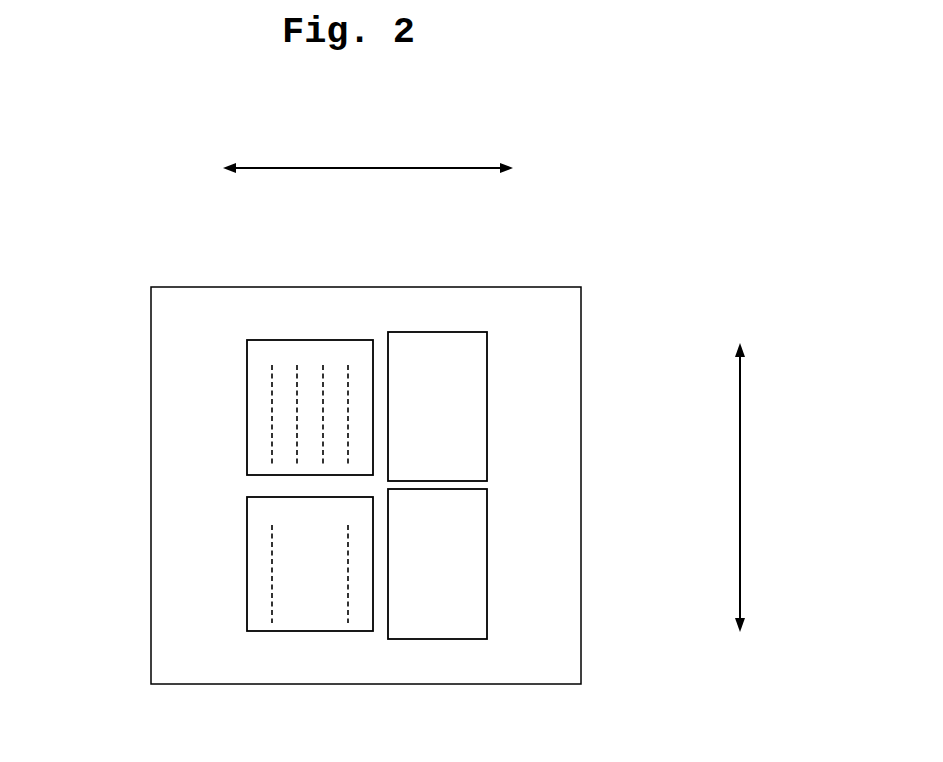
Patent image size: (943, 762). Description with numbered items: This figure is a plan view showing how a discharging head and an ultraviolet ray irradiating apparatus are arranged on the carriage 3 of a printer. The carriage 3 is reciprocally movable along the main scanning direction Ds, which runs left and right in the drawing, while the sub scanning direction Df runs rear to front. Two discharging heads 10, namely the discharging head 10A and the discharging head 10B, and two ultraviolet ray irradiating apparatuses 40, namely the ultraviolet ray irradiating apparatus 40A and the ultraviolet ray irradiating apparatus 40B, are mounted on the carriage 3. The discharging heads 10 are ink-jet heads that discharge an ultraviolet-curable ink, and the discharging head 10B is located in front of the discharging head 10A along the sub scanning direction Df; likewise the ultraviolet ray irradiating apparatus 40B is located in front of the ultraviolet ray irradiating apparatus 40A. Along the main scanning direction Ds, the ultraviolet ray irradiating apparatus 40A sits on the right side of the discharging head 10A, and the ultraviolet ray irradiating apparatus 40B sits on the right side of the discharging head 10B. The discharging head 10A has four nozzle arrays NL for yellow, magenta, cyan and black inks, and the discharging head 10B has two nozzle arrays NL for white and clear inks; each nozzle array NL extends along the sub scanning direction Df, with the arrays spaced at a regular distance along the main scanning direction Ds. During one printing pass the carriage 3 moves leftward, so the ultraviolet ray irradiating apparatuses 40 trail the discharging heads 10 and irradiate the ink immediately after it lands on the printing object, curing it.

The carriage 3 is at (526, 306).
The discharging head 10 is at (197, 485).
The discharging head 10A is at (287, 425).
The discharging head 10B is at (290, 575).
The ultraviolet ray irradiating apparatus 40 is at (548, 485).
The ultraviolet ray irradiating apparatus 40A is at (472, 413).
The ultraviolet ray irradiating apparatus 40B is at (467, 568).
The nozzle array NL is at (261, 374).
The main scanning direction Ds is at (356, 168).
The sub scanning direction Df is at (740, 508).